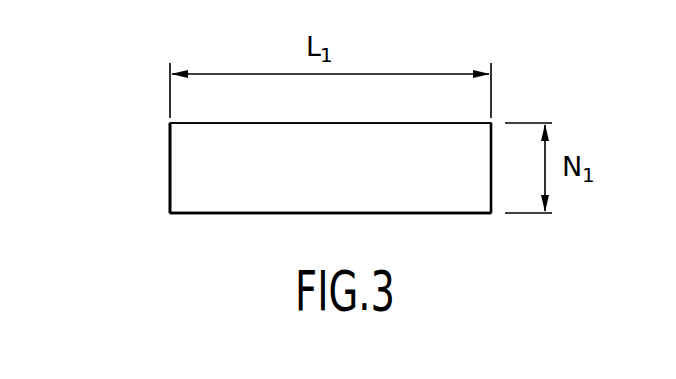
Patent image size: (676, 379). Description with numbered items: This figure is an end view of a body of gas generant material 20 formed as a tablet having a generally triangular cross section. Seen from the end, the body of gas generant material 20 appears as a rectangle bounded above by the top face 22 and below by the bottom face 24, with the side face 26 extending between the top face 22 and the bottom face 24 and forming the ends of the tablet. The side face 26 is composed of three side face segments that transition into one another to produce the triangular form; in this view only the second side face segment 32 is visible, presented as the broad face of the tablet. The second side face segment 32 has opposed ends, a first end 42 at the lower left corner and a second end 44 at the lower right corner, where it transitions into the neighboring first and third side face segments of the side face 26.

The body of gas generant material 20 is at (136, 142).
The top face 22 is at (228, 122).
The bottom face 24 is at (415, 215).
The side face 26 is at (204, 178).
The second side face segment 32 is at (258, 185).
The first end of second side face segment 42 is at (168, 222).
The second end of second side face segment 44 is at (492, 220).